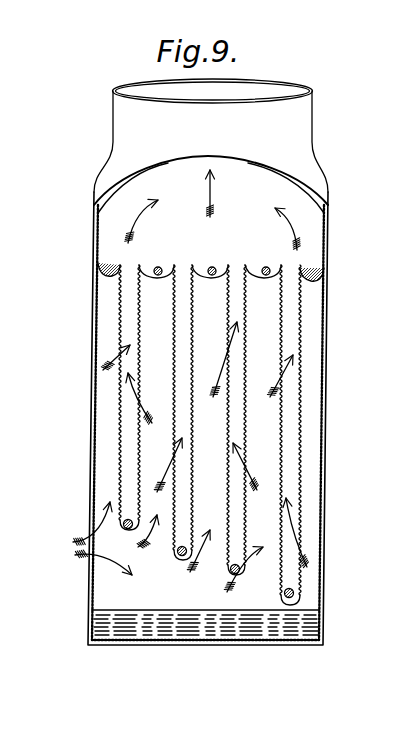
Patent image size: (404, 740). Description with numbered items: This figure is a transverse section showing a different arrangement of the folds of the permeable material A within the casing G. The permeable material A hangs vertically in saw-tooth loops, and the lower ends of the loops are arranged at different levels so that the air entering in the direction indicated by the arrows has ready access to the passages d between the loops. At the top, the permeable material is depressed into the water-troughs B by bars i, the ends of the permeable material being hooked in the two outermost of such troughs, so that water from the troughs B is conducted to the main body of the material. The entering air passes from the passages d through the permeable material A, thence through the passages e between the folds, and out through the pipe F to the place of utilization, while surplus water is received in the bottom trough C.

The pipe F is at (211, 135).
The casing G is at (328, 369).
The permeable material A is at (118, 397).
The water-trough B is at (100, 268).
The bars i is at (158, 266).
The passages e is at (198, 401).
The passages d is at (190, 381).
The bottom trough C is at (172, 622).